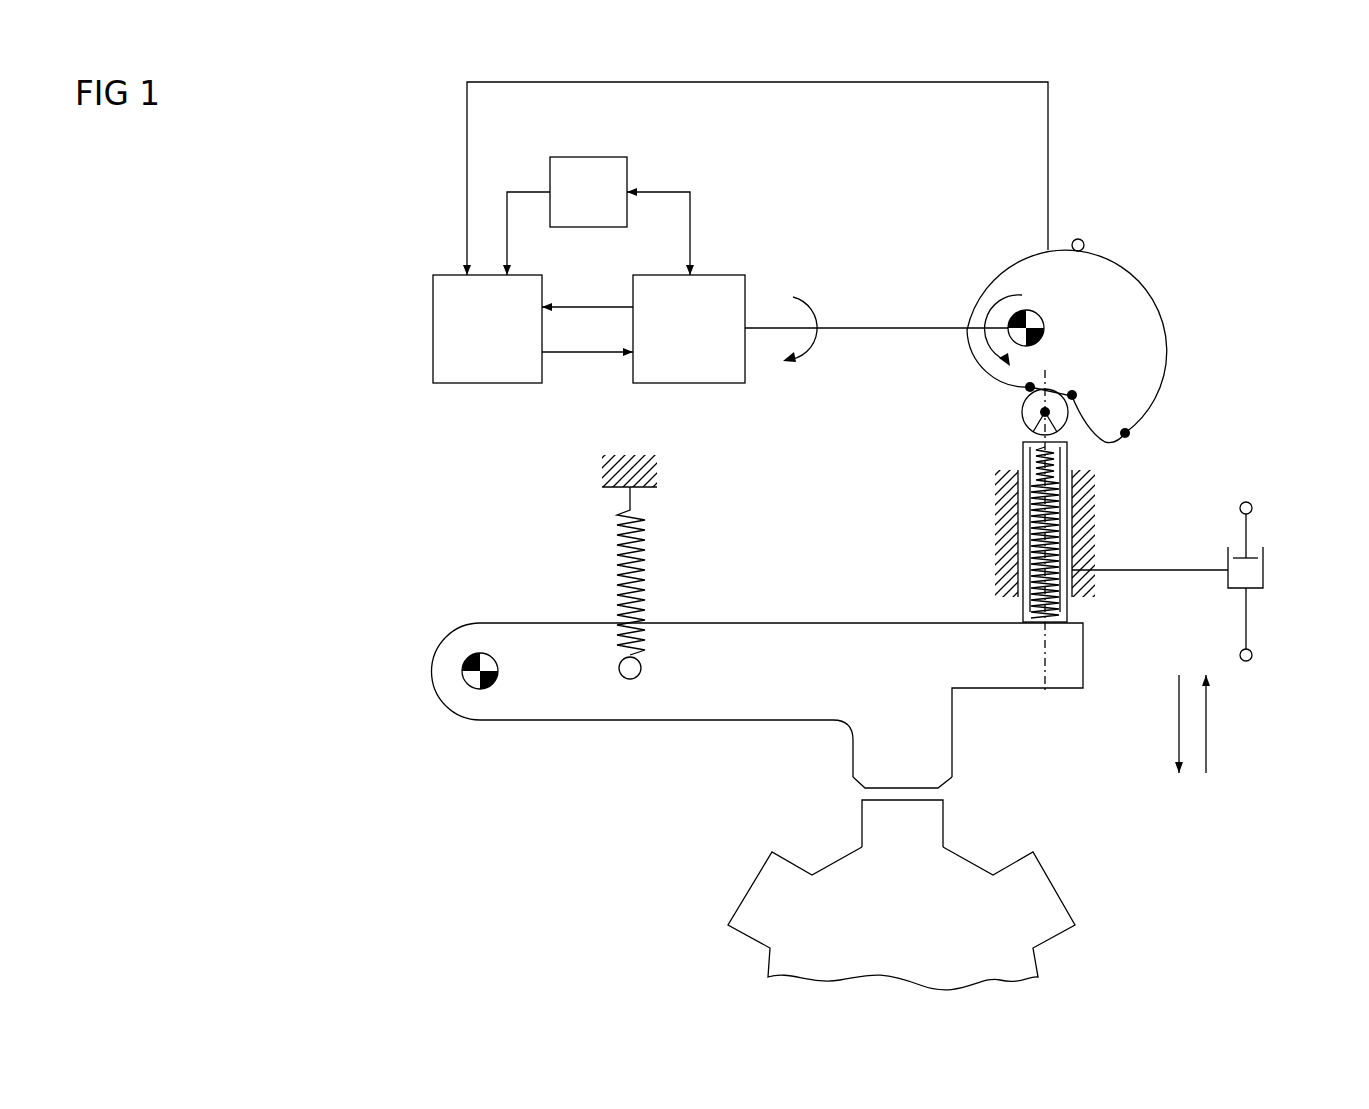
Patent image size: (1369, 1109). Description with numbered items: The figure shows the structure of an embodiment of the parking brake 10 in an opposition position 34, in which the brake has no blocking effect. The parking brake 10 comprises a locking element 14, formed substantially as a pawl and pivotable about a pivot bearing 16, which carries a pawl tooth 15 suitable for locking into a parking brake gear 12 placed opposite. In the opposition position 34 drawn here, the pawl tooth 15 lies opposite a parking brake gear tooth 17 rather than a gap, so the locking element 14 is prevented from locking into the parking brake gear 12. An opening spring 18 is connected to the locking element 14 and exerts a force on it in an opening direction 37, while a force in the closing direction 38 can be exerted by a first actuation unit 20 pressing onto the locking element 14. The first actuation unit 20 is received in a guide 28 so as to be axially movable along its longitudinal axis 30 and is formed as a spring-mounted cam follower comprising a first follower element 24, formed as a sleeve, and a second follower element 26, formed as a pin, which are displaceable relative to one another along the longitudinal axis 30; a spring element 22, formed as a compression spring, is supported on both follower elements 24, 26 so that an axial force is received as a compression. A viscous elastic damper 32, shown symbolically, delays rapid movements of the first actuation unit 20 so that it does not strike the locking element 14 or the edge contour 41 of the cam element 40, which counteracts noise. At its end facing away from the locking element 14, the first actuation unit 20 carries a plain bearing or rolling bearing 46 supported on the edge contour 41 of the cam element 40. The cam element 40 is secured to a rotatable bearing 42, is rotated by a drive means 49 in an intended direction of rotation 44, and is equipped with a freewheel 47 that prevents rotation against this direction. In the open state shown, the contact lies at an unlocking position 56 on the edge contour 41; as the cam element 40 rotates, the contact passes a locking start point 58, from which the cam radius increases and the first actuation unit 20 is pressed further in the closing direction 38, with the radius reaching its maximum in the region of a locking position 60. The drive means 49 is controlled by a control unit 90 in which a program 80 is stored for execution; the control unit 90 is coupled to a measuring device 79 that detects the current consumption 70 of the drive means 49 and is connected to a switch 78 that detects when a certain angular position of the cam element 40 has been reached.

The parking brake 10 is at (259, 799).
The parking brake gear 12 is at (958, 870).
The locking element 14 is at (534, 724).
The pawl tooth 15 is at (861, 756).
The pivot bearing 16 is at (460, 671).
The parking brake gear tooth 17 is at (865, 822).
The opening spring 18 is at (616, 565).
The first actuation unit 20 is at (991, 529).
The spring element 22 is at (1023, 575).
The first follower element 24 is at (1023, 603).
The second follower element 26 is at (1023, 455).
The guide 28 is at (1016, 543).
The longitudinal axis 30 is at (1048, 702).
The viscous elastic damper 32 is at (1265, 570).
The opposition position 34 is at (657, 887).
The opening direction 37 is at (1208, 737).
The closing direction 38 is at (1177, 739).
The cam element 40 is at (1102, 332).
The edge contour 41 is at (1168, 363).
The rotatable bearing 42 is at (1036, 314).
The intended direction of rotation 44 is at (991, 305).
The plain bearing or rolling bearing 46 is at (1022, 416).
The freewheel 47 is at (1083, 240).
The drive means 49 is at (689, 329).
The unlocking position 56 is at (1074, 392).
The locking start point 58 is at (1024, 387).
The locking position 60 is at (1128, 438).
The current consumption 70 is at (724, 349).
The switch 78 is at (963, 83).
The measuring device 79 is at (604, 211).
The program 80 is at (487, 329).
The control unit 90 is at (522, 349).